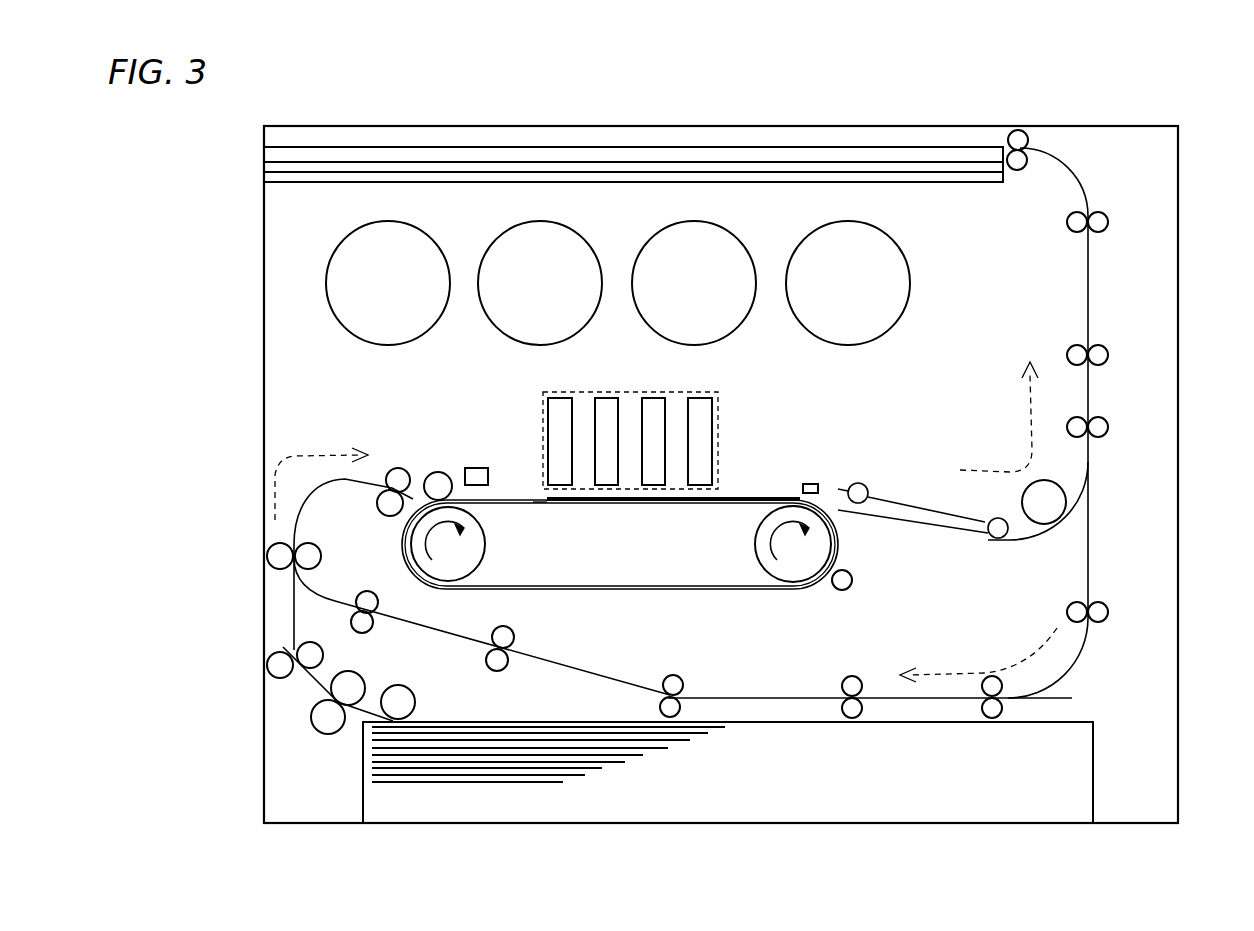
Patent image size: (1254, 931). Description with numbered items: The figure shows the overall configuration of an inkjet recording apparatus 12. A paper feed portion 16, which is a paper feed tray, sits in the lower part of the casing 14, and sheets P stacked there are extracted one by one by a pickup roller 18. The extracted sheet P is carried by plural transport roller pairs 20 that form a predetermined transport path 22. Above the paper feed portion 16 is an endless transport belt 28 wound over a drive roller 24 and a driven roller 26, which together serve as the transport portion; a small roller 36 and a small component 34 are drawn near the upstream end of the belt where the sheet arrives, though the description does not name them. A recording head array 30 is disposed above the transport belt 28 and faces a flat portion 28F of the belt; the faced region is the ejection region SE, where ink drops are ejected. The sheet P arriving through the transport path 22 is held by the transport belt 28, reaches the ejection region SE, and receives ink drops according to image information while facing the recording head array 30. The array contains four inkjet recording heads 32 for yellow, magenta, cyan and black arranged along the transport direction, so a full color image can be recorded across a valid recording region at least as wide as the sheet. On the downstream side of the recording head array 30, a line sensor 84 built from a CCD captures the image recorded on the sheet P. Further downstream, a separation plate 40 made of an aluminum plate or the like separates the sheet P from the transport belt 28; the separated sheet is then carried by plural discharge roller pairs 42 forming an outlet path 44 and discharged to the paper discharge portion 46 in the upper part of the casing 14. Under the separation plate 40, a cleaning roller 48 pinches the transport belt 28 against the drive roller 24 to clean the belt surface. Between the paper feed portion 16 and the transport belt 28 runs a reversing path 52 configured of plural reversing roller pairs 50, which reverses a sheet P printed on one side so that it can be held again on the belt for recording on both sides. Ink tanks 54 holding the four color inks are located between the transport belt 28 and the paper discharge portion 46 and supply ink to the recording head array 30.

The inkjet recording apparatus 12 is at (1034, 95).
The casing 14 is at (1178, 345).
The paper feed portion 16 is at (1093, 793).
The pickup roller 18 is at (416, 697).
The transport roller pairs 20 is at (400, 470).
The transport path 22 is at (292, 610).
The drive roller 24 is at (486, 548).
The driven roller 26 is at (755, 543).
The transport belt 28 is at (697, 590).
The flat portion 28F is at (538, 502).
The recording head array 30 is at (540, 412).
The inkjet recording heads 32 is at (558, 398).
The sheet sensor 34 is at (476, 466).
The pressing roller 36 is at (436, 472).
The separation plate 40 is at (855, 514).
The discharge roller pairs 42 is at (1030, 165).
The outlet path 44 is at (1090, 290).
The paper discharge portion 46 is at (966, 184).
The cleaning roller 48 is at (853, 580).
The reversing roller pairs 50 is at (352, 612).
The reversing path 52 is at (765, 696).
The ink tanks 54 is at (344, 331).
The line sensor 84 is at (813, 482).
The sheet P is at (660, 504).
The ejection region SE is at (718, 497).